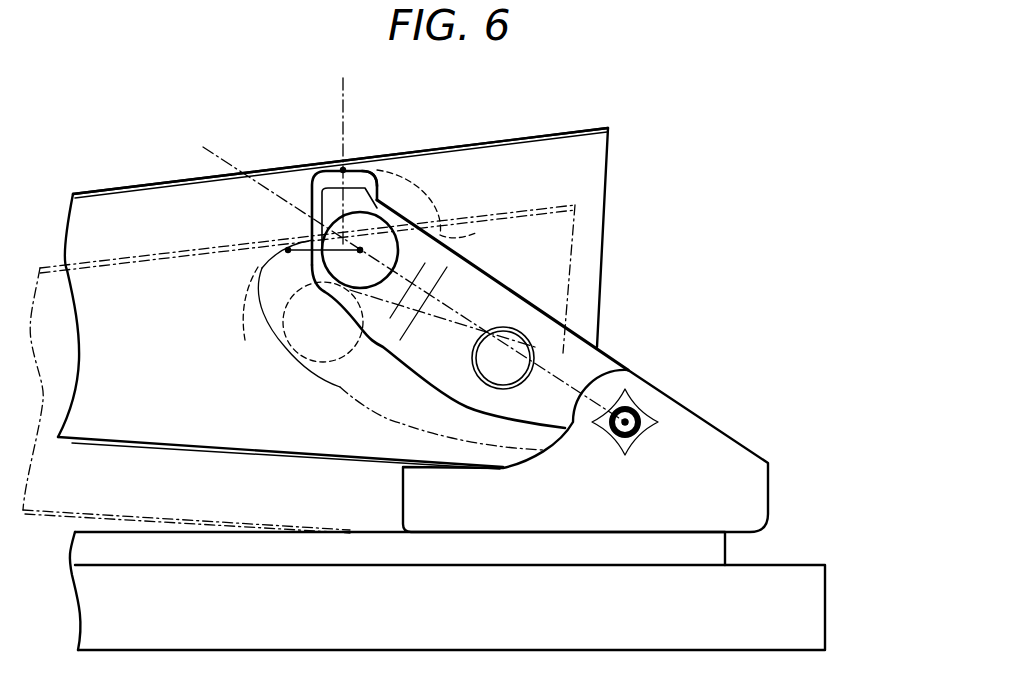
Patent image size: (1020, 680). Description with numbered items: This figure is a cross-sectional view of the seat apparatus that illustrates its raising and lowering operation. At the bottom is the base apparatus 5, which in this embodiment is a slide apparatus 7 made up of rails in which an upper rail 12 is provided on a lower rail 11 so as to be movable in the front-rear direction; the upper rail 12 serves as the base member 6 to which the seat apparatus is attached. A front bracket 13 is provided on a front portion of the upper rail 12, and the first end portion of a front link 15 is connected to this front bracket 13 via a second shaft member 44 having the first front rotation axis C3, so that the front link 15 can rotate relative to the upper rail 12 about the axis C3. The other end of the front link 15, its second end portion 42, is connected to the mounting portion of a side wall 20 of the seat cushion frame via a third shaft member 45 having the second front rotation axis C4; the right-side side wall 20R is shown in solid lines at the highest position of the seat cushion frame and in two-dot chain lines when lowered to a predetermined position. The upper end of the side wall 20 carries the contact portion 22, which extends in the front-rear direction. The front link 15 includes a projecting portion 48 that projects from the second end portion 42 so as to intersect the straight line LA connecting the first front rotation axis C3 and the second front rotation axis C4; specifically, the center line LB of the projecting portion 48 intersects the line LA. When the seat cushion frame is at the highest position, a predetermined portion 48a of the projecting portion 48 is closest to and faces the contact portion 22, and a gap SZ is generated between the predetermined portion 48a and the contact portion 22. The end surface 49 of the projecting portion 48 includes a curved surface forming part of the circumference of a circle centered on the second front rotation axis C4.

The base apparatus 5 is at (866, 473).
The slide apparatus 7 is at (832, 500).
The base member 6 is at (728, 552).
The lower rail 11 is at (825, 607).
The upper rail 12 is at (469, 541).
The front bracket 13 is at (738, 441).
The front link 15 is at (585, 340).
The side wall 20 is at (340, 174).
The side wall on the right side 20R is at (120, 220).
The contact portion 22 is at (477, 147).
The second end portion 42 is at (284, 253).
The second shaft member 44 is at (637, 410).
The third shaft member 45 is at (320, 236).
The projecting portion 48 is at (310, 210).
The predetermined portion 48a is at (326, 171).
The end surface 49 is at (363, 166).
The gap SZ is at (350, 163).
The straight line LA is at (218, 145).
The center line LB is at (343, 92).
The first front rotation axis C3 is at (609, 438).
The second front rotation axis C4 is at (362, 250).